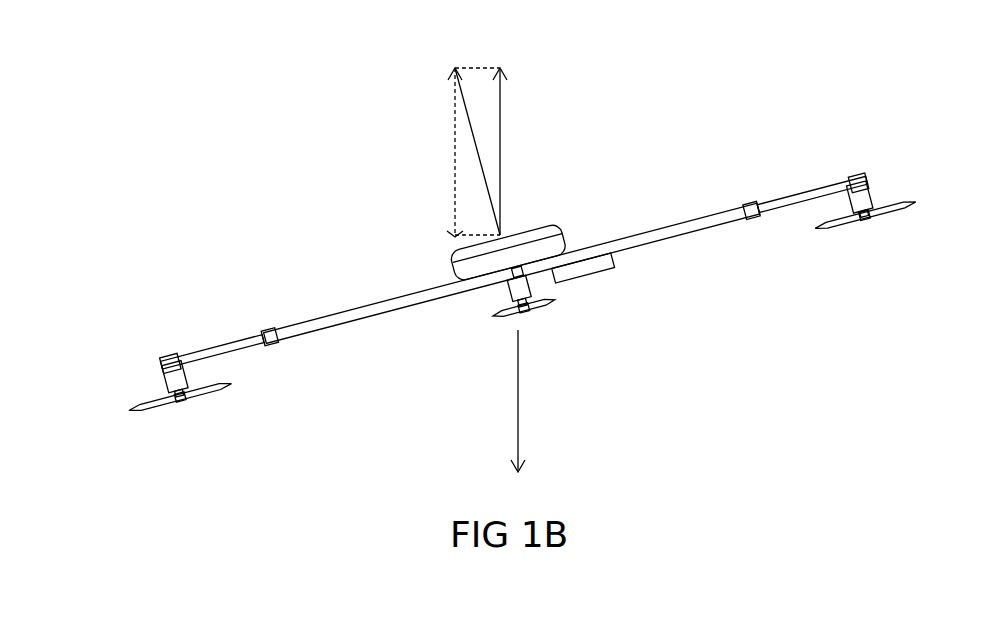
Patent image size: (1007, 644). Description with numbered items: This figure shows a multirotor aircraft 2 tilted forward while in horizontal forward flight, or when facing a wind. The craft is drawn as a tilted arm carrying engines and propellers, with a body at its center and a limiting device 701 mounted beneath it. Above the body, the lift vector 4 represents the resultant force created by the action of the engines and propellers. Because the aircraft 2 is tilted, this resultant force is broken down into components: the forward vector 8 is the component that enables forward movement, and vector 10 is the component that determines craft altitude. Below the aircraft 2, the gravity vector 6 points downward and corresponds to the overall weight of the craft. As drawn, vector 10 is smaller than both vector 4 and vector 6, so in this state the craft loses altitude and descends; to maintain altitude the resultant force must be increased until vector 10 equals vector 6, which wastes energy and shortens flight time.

The multirotor aircraft 2 is at (680, 218).
The lift vector 4 is at (455, 127).
The gravity vector 6 is at (518, 402).
The forward vector 8 is at (457, 231).
The altitude vector component 10 is at (500, 133).
The limiting device 701 is at (598, 268).